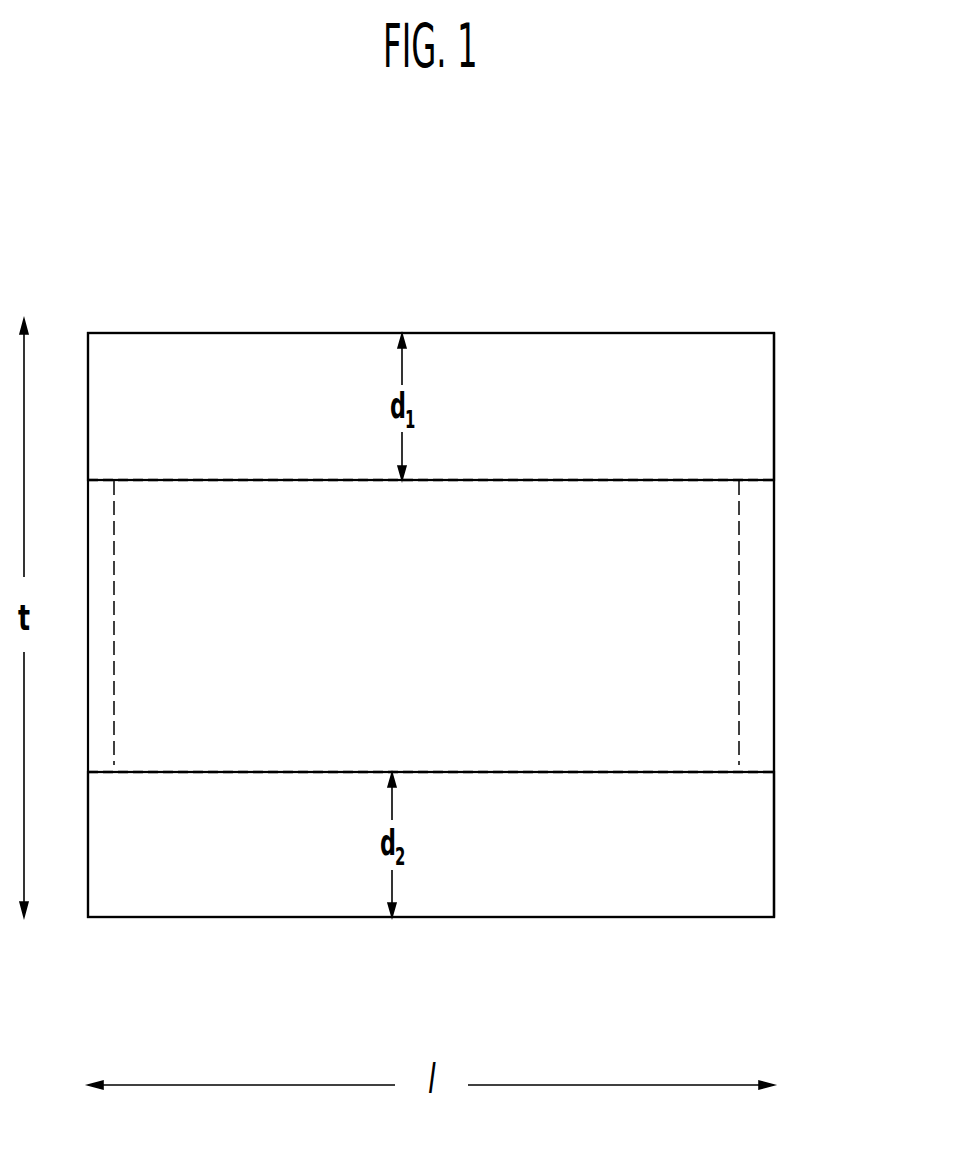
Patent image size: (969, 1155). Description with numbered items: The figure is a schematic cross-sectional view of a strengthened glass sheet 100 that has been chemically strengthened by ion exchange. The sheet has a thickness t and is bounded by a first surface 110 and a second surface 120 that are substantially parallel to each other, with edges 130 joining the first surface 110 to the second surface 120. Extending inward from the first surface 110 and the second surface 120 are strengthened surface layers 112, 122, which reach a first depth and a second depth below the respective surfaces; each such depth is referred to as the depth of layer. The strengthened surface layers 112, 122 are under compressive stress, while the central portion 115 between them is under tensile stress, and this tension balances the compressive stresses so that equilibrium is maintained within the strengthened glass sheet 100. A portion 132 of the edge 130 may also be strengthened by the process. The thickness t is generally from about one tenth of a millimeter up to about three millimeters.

The strengthened glass sheet 100 is at (450, 197).
The first surface 110 is at (156, 331).
The strengthened surface layer 112 is at (431, 406).
The central portion 115 is at (431, 626).
The second surface 120 is at (431, 963).
The strengthened surface layer 122 is at (431, 844).
The edge 130 is at (786, 878).
The portion of edge 132 is at (768, 545).